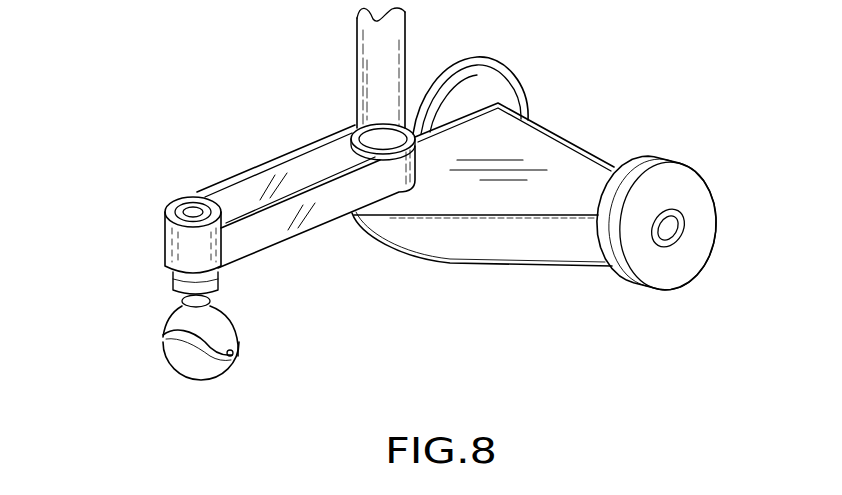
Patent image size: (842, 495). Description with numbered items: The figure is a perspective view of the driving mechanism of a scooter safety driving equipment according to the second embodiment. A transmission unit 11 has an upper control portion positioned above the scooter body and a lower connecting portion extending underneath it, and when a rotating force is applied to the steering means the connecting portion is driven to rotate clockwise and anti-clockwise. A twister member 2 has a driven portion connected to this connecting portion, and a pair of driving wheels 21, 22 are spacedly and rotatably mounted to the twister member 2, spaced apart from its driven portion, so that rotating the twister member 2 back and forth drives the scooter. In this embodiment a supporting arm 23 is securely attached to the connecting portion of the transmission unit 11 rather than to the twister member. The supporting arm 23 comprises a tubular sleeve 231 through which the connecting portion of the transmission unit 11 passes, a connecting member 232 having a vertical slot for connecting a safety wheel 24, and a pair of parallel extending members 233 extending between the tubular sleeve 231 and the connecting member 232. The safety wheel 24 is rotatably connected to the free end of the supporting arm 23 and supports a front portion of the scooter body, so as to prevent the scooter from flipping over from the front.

The twister member 2 is at (485, 238).
The transmission unit 11 is at (380, 88).
The driving wheel 21 is at (697, 202).
The driving wheel 22 is at (488, 92).
The supporting arm 23 is at (238, 138).
The safety wheel 24 is at (192, 355).
The tubular sleeve 231 is at (352, 156).
The connecting member 232 is at (185, 250).
The parallel extending members 233 is at (302, 188).